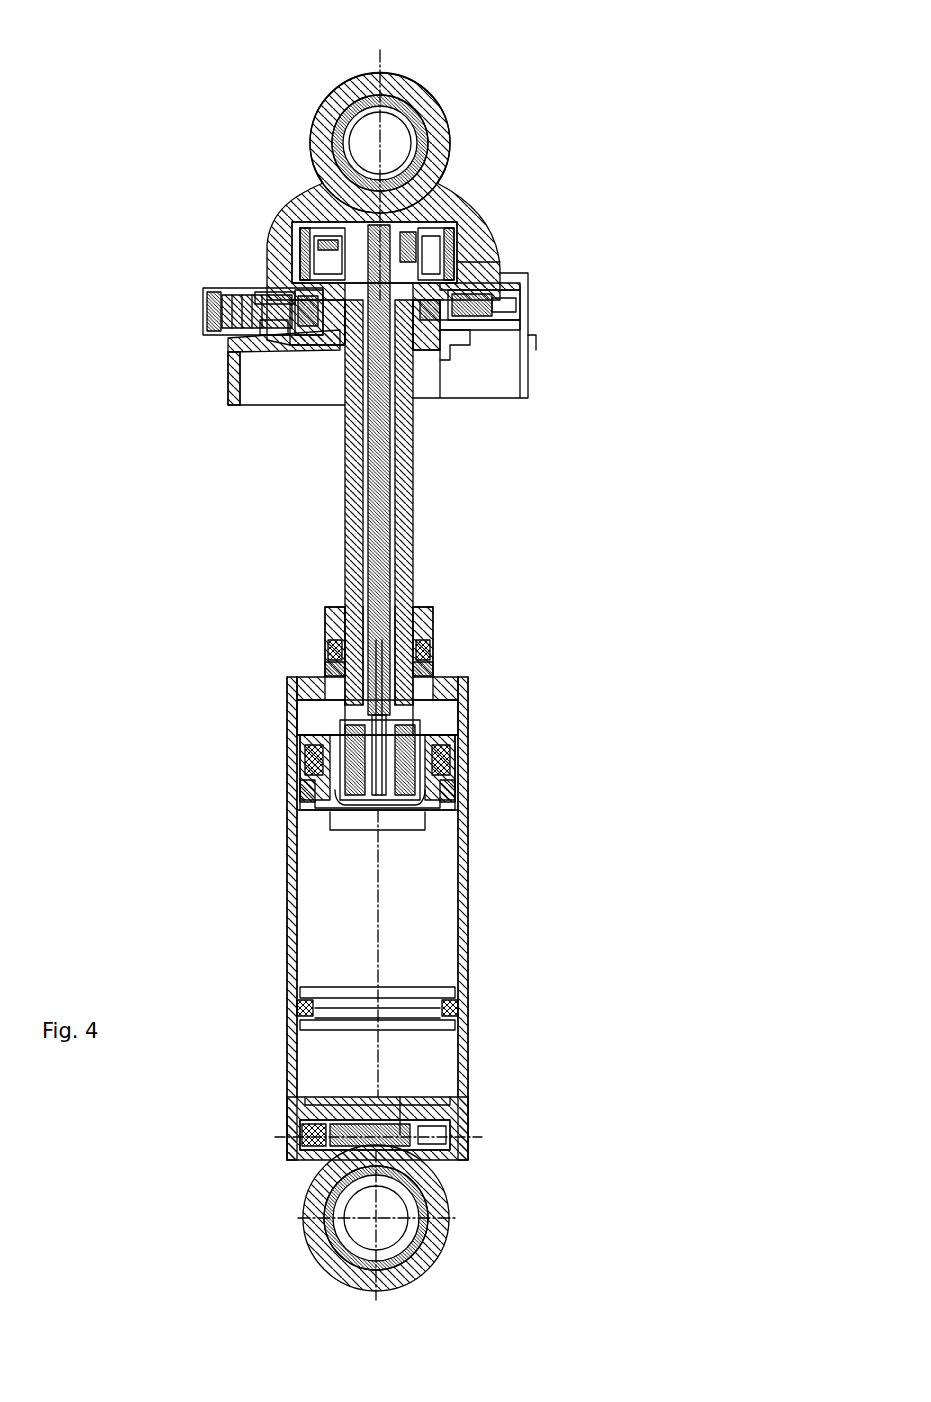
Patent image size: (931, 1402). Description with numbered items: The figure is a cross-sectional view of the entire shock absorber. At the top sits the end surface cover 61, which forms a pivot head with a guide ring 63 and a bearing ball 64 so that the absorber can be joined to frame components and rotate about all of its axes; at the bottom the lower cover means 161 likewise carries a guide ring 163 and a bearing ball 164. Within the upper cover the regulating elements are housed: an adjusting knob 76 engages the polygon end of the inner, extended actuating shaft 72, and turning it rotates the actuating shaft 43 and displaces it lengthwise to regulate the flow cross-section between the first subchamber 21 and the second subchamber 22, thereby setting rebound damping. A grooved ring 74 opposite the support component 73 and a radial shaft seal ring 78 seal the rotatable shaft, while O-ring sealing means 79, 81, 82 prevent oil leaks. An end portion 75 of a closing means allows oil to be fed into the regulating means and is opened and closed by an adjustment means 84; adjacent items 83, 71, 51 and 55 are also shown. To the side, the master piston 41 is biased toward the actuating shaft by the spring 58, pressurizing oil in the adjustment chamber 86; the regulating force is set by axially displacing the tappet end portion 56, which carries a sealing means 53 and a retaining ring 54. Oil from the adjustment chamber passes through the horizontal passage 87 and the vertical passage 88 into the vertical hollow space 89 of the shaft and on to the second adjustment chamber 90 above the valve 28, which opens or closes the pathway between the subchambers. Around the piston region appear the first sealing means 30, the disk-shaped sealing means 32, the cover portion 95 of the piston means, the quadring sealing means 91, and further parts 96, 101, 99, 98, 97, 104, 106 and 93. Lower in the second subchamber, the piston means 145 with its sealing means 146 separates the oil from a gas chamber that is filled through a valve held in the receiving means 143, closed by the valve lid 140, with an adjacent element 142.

The master piston 41 is at (268, 268).
The seal carrier 51 is at (300, 232).
The seal 55 is at (330, 240).
The end surface cover 61 is at (370, 228).
The guide ring 63 is at (388, 226).
The bearing ball 64 is at (408, 240).
The retainer 71 is at (435, 252).
The inner extended actuating shaft 72 is at (450, 250).
The grooved ring 74 is at (465, 250).
The adjusting knob 76 is at (475, 262).
The radial shaft seal ring 78 is at (488, 270).
The support component 73 is at (500, 275).
The sealing means 79 is at (505, 288).
The end portion of closing means 75 is at (520, 295).
The passage 83 is at (508, 322).
The adjustment means 84 is at (512, 345).
The sealing means 81 is at (445, 325).
The sealing means 53 is at (270, 272).
The retaining ring 54 is at (248, 292).
The end portion (tappet) 56 is at (240, 300).
The biasing means (spring) 58 is at (212, 312).
The adjustment chamber 86 is at (248, 340).
The sealing means 82 is at (238, 368).
The horizontal passage 87 is at (352, 395).
The actuating shaft 43 is at (352, 508).
The vertical passage 88 is at (382, 480).
The rod guide 96 is at (330, 622).
The seal ring 101 is at (335, 658).
The guide flange 99 is at (312, 698).
The first sealing means 30 is at (300, 714).
The valve housing 98 is at (300, 738).
The seal 97 is at (305, 752).
The valve 28 is at (316, 790).
The cover portion of piston means 95 is at (340, 802).
The rod passage 104 is at (432, 650).
The vertical hollow space 89 is at (430, 672).
The first subchamber 21 is at (468, 700).
The partition 106 is at (460, 730).
The sealing means (quadring) 91 is at (455, 762).
The ring 93 is at (468, 795).
The disk-shaped sealing means 32 is at (478, 806).
The second adjustment chamber 90 is at (440, 826).
The second subchamber 22 is at (430, 812).
The sealing means 146 is at (470, 1013).
The piston means 145 is at (420, 1016).
The valve lid 140 is at (283, 1138).
The valve member 142 is at (295, 1160).
The receiving means 143 is at (308, 1163).
The lower cover means 161 is at (425, 1265).
The guide ring 163 is at (440, 1253).
The bearing ball 164 is at (440, 1213).